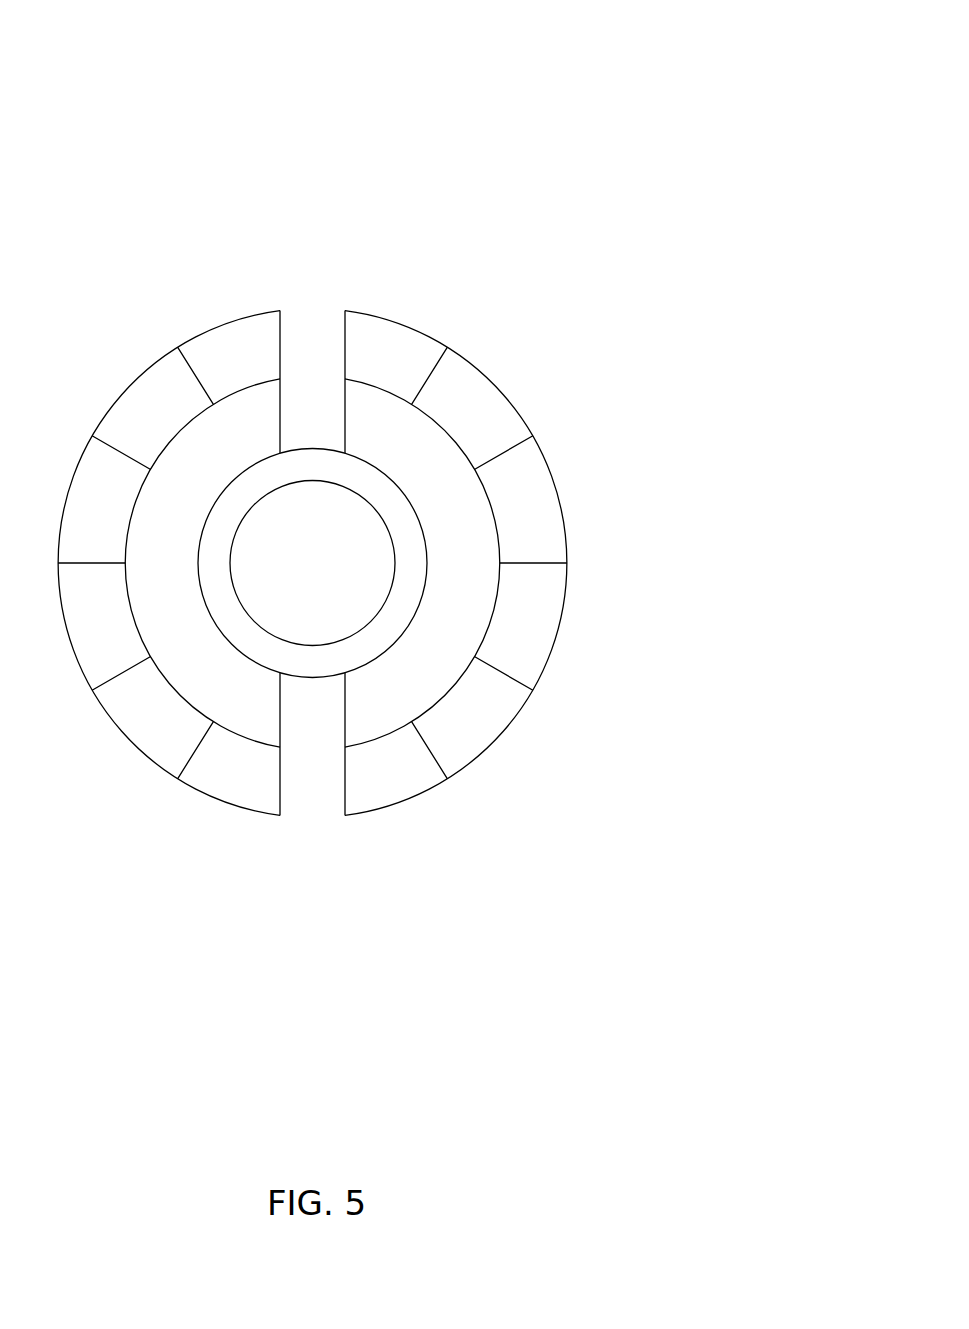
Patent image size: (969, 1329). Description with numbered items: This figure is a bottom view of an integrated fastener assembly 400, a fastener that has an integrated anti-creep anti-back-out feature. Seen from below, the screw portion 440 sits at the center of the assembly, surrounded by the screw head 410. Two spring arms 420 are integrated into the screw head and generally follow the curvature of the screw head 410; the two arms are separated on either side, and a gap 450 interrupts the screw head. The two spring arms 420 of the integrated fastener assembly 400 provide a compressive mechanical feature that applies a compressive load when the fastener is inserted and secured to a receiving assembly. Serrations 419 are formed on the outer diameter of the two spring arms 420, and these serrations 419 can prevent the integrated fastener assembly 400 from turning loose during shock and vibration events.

The integrated fastener assembly 400 is at (372, 441).
The screw head 410 is at (372, 563).
The serrations 419 is at (512, 675).
The spring arms 420 is at (343, 810).
The screw portion 440 is at (395, 563).
The gap 450 is at (316, 318).